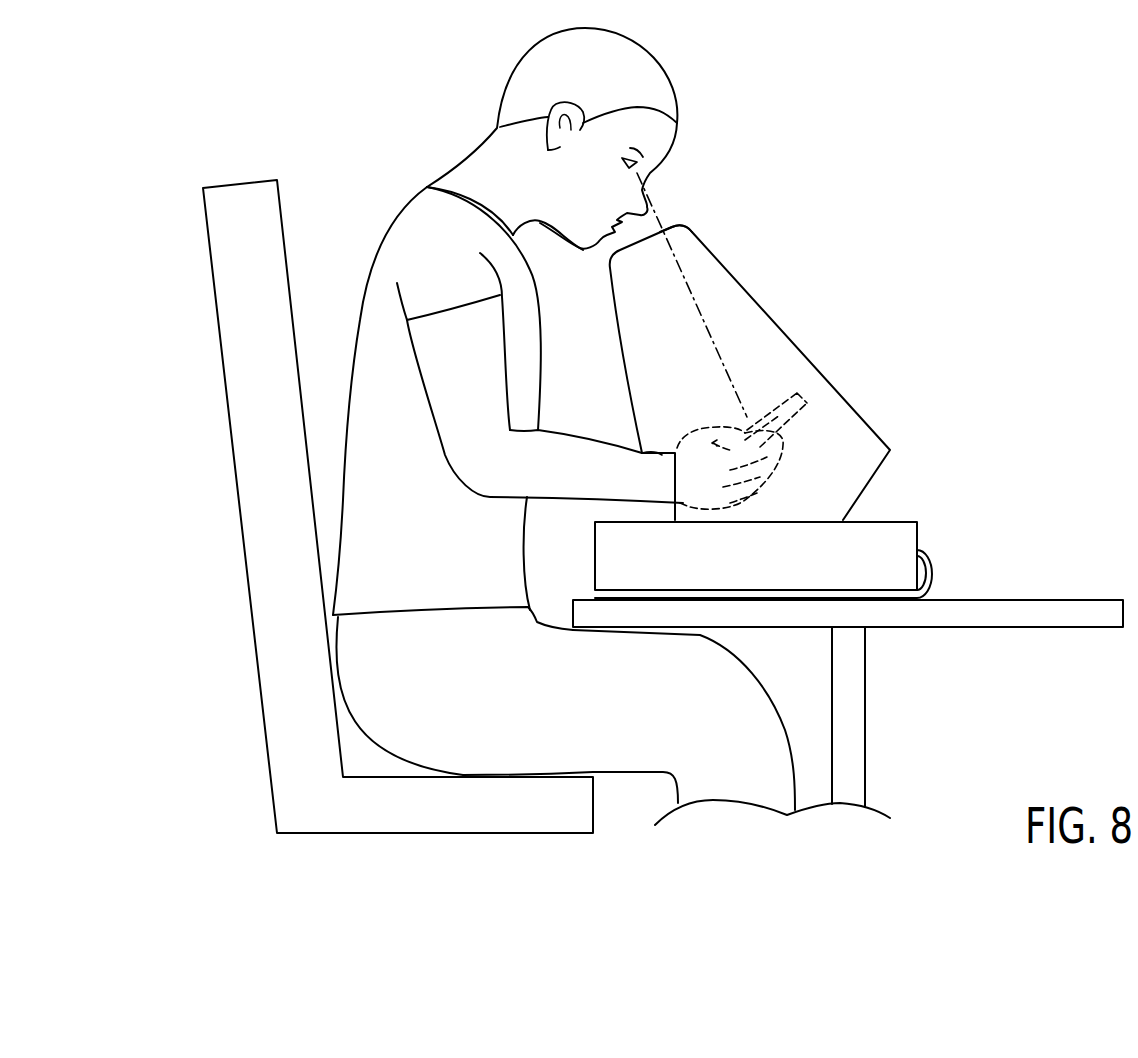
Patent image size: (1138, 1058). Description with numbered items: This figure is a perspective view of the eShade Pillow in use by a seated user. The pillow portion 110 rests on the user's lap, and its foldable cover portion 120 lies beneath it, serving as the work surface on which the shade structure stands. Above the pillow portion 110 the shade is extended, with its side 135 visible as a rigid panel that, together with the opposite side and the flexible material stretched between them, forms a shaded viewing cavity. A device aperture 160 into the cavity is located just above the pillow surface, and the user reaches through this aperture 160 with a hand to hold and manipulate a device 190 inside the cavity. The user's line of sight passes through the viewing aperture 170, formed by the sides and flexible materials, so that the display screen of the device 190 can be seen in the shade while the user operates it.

The pillow portion 110 is at (818, 567).
The foldable cover portion 120 is at (898, 592).
The side 135 is at (748, 317).
The device aperture 160 is at (673, 512).
The viewing aperture 170 is at (680, 225).
The device 190 is at (813, 387).